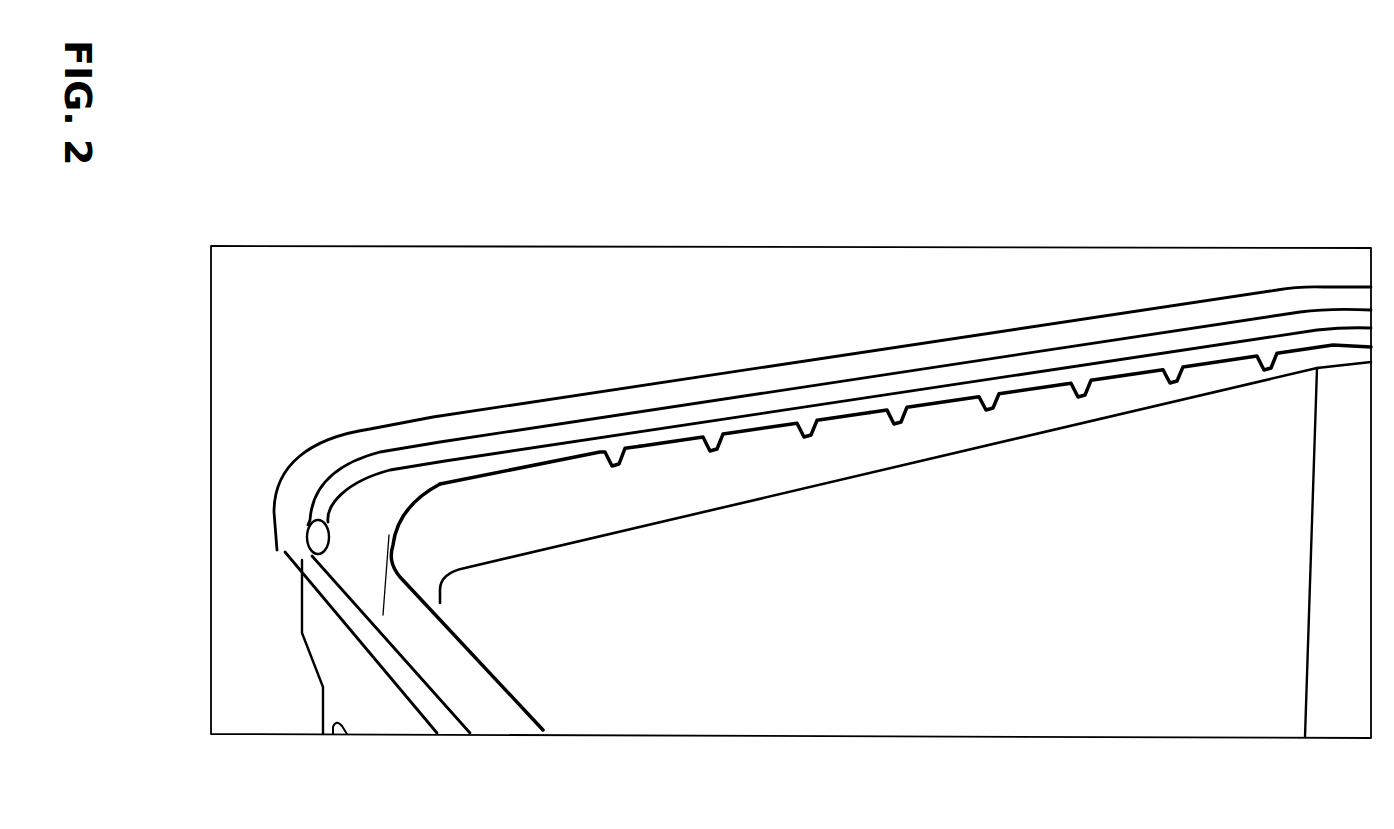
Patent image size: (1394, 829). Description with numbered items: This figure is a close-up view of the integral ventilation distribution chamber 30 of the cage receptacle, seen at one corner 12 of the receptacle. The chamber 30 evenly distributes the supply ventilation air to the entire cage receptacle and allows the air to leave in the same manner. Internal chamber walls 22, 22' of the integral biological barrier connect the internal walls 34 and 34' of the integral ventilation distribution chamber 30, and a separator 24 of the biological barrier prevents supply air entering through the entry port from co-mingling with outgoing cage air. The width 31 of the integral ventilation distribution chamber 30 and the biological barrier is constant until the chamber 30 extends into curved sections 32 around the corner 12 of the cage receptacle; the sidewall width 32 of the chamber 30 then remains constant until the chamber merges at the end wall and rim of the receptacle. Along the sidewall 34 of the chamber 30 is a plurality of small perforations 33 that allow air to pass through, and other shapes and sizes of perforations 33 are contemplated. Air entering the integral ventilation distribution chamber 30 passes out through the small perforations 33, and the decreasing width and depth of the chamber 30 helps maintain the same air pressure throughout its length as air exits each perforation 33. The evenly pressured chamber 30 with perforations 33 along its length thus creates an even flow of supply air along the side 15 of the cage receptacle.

The corner 12 is at (325, 497).
The side 15 is at (1017, 547).
The internal chamber wall 22 is at (904, 501).
The internal chamber wall 22' is at (543, 637).
The separator 24 is at (427, 680).
The integral ventilation distribution chamber 30 is at (367, 518).
The width 31 is at (410, 625).
The curved section 32 is at (306, 554).
The small perforation 33 is at (622, 458).
The sidewall 34 is at (804, 534).
The internal wall 34' is at (1120, 479).